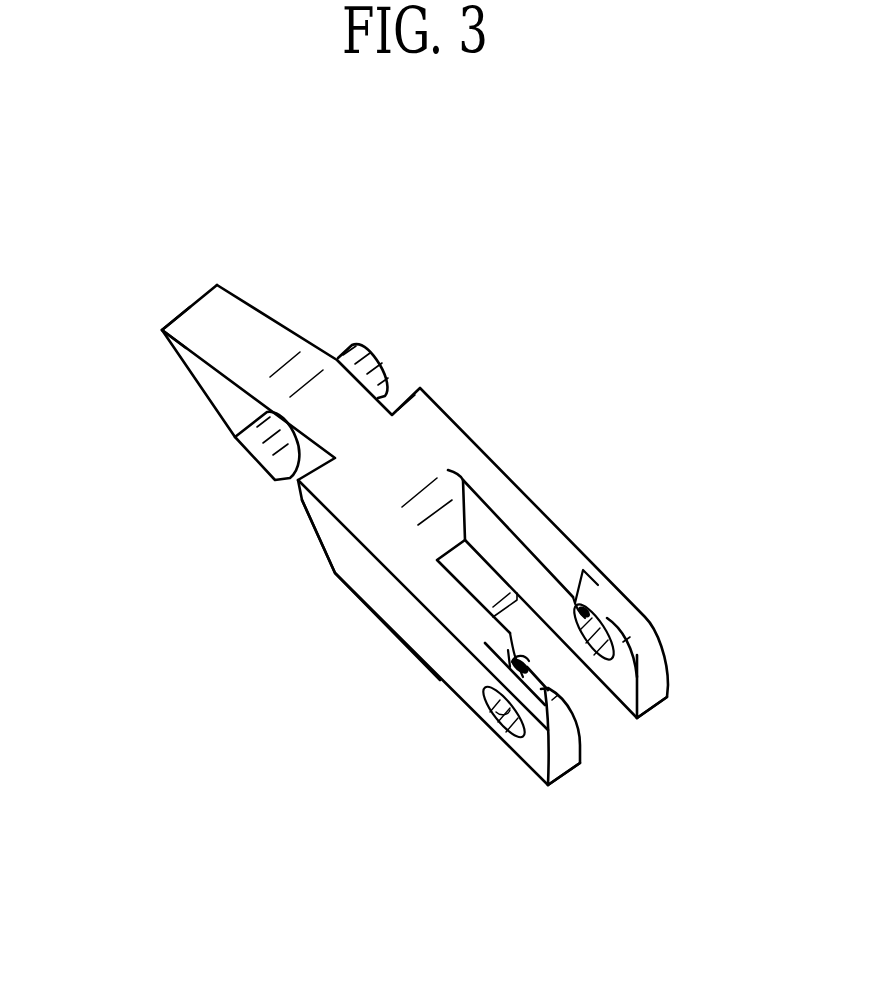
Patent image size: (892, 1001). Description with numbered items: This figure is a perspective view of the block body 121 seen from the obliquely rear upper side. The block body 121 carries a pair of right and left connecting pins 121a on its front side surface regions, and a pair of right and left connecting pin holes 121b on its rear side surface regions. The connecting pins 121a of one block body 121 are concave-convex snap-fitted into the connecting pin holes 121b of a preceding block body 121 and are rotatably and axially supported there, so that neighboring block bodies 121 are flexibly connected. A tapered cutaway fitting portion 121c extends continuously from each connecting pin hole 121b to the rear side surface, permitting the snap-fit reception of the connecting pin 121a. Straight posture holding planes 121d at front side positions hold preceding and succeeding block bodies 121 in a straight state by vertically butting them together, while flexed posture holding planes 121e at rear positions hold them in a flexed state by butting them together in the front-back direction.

The block body 121 is at (750, 307).
The connecting pin 121a is at (378, 363).
The connecting pin hole 121b is at (500, 713).
The tapered cutaway fitting portion 121c is at (513, 663).
The straight posture holding plane 121d is at (188, 362).
The flexed posture holding plane 121e is at (318, 535).